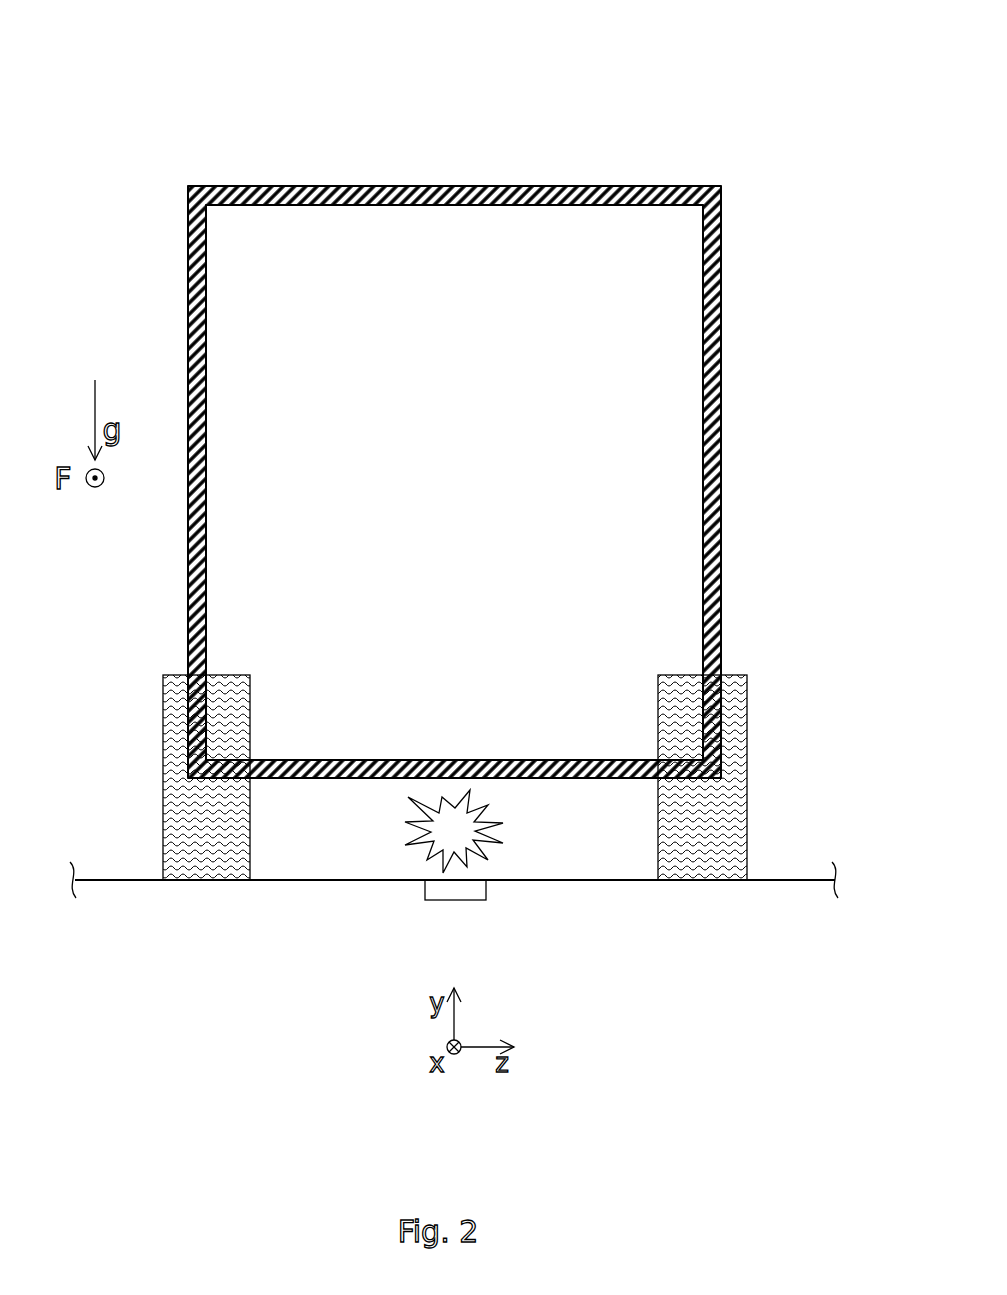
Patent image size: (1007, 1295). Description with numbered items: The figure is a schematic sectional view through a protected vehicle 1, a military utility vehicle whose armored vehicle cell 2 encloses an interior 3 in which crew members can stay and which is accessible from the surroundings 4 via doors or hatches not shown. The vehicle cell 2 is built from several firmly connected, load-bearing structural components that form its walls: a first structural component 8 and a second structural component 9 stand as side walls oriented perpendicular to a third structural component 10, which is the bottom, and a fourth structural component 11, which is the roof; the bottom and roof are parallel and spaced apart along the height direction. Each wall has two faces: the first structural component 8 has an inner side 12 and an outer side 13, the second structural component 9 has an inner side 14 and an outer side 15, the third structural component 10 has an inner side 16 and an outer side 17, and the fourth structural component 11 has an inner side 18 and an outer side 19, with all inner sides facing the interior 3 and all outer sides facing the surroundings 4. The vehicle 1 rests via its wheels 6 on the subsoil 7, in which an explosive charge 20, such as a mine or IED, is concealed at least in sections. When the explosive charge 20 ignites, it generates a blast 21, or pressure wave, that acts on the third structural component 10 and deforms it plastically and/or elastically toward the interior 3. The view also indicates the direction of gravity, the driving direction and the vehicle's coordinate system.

The protected vehicle 1 is at (455, 92).
The vehicle cell 2 is at (730, 192).
The interior 3 is at (443, 478).
The surroundings 4 is at (98, 566).
The wheels 6 is at (163, 704).
The subsoil 7 is at (122, 880).
The first structural component 8 is at (188, 336).
The second structural component 9 is at (722, 278).
The third structural component 10 is at (288, 780).
The fourth structural component 11 is at (572, 186).
The inner side 12 is at (207, 523).
The outer side 13 is at (188, 278).
The inner side 14 is at (702, 380).
The outer side 15 is at (723, 525).
The inner side 16 is at (388, 760).
The outer side 17 is at (563, 778).
The inner side 18 is at (275, 205).
The outer side 19 is at (340, 186).
The explosive charge 20 is at (470, 900).
The blast 21 is at (465, 788).